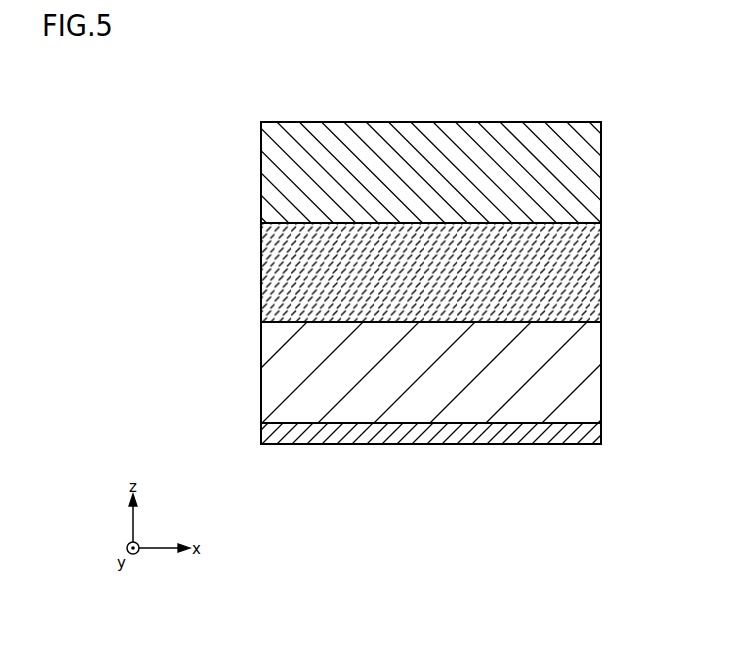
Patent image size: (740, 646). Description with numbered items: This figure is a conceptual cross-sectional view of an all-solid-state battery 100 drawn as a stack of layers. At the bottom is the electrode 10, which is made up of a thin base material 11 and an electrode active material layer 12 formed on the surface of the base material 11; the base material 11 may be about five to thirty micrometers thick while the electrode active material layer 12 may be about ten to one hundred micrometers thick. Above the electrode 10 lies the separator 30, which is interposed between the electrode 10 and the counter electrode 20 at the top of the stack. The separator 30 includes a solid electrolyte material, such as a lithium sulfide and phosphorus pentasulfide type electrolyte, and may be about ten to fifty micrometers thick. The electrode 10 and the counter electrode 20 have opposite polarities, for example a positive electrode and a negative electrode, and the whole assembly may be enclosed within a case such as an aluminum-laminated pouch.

The all-solid-state battery 100 is at (613, 95).
The counter electrode 20 is at (261, 175).
The separator 30 is at (261, 276).
The electrode 10 is at (424, 383).
The electrode active material layer 12 is at (261, 378).
The base material 11 is at (414, 433).